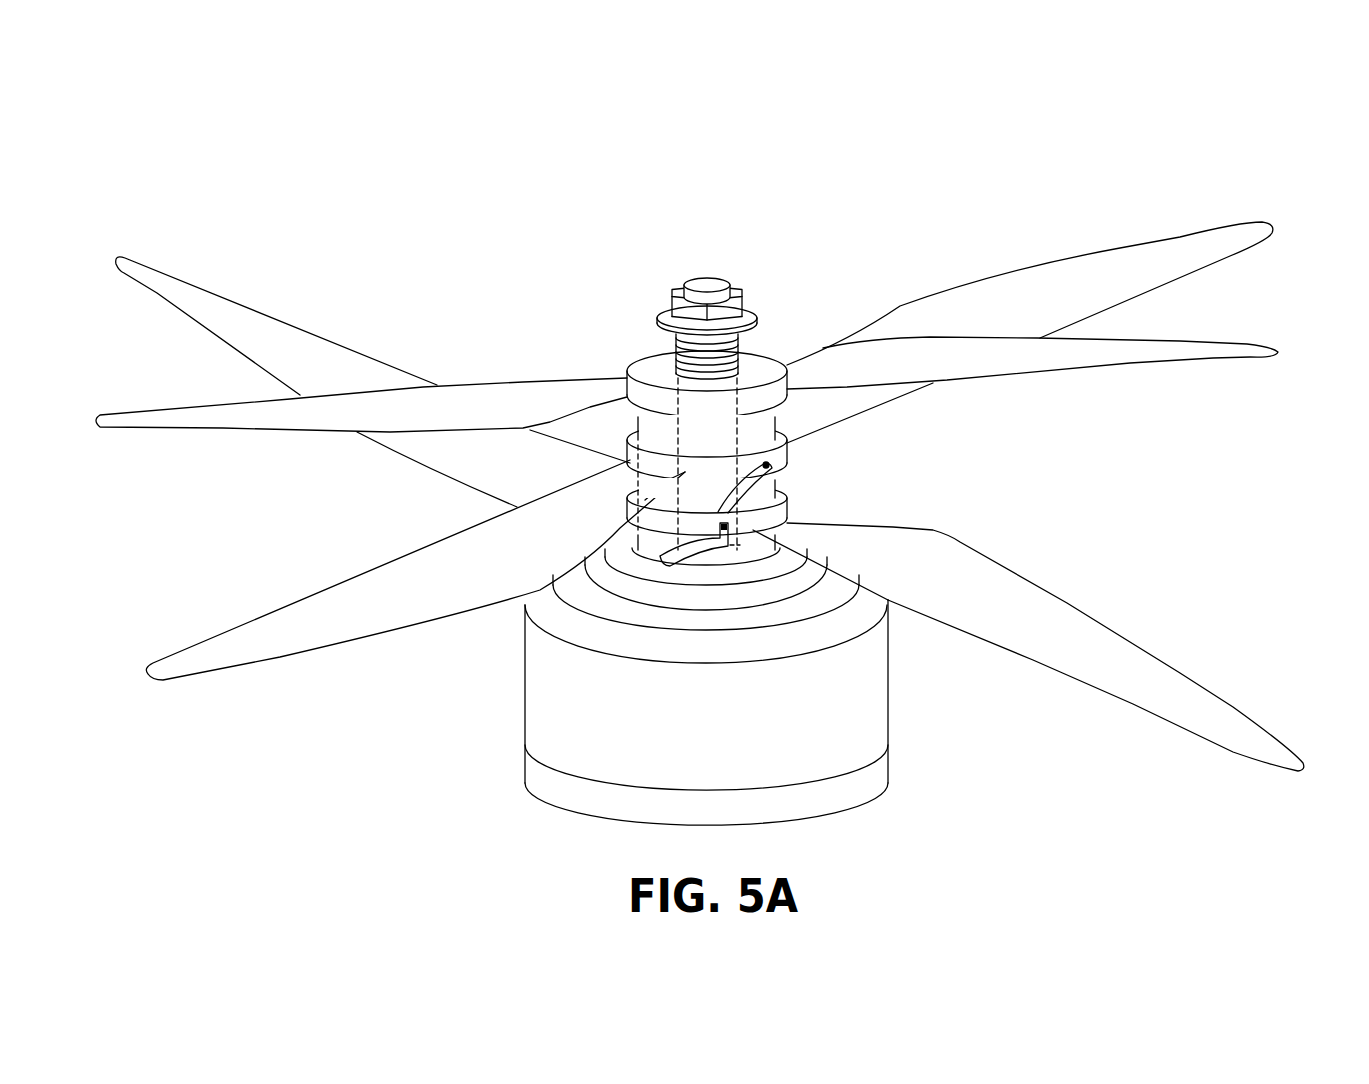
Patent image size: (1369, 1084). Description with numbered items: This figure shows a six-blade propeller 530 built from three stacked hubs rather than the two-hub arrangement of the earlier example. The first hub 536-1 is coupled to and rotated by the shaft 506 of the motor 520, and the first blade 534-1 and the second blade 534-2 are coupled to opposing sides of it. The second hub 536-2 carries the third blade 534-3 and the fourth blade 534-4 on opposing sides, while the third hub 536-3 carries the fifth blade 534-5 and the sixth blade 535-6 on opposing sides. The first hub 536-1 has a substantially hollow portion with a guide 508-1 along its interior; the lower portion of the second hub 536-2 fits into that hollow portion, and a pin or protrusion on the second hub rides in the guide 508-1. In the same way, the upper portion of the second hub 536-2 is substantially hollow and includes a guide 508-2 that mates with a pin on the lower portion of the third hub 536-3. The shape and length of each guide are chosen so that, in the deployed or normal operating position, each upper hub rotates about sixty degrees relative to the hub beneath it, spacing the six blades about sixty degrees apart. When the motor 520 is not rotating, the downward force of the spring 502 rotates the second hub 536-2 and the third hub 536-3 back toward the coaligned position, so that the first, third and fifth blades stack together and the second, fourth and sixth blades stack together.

The spring 502 is at (770, 305).
The shaft 506 is at (697, 383).
The guide 508-1 is at (685, 560).
The guide 508-2 is at (787, 490).
The motor 520 is at (867, 710).
The propeller 530 is at (838, 143).
The first blade 534-1 is at (1137, 663).
The second blade 534-2 is at (285, 348).
The third blade 534-3 is at (1058, 280).
The fourth blade 534-4 is at (293, 632).
The fifth blade 534-5 is at (1133, 360).
The sixth blade 535-6 is at (237, 413).
The first hub 536-1 is at (787, 520).
The second hub 536-2 is at (787, 460).
The third hub 536-3 is at (763, 360).